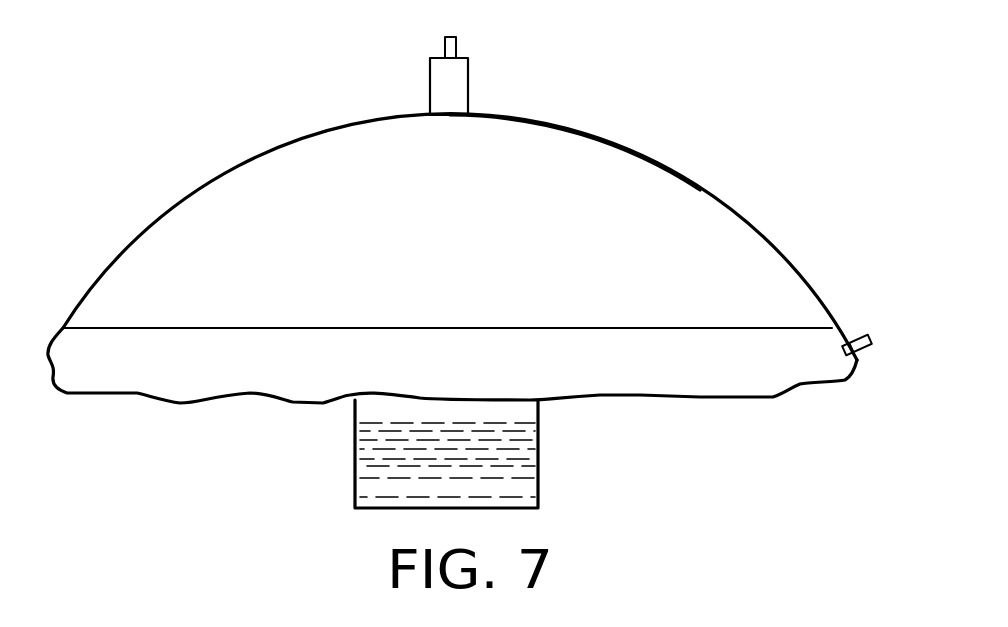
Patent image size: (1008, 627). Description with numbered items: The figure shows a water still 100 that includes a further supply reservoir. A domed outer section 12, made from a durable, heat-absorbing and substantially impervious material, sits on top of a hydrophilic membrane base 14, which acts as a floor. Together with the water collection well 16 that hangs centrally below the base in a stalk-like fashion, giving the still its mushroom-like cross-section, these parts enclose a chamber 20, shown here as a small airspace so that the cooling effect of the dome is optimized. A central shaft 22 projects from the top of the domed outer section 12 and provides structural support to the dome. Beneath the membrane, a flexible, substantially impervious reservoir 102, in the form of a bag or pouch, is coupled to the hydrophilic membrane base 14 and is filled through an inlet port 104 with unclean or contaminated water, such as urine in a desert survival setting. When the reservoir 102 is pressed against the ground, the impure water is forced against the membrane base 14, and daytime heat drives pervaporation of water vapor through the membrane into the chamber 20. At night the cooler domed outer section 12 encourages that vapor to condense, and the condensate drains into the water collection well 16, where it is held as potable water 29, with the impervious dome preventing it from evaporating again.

The domed outer section 12 is at (650, 160).
The hydrophilic membrane base 14 is at (160, 328).
The water collection well 16 is at (542, 460).
The chamber 20 is at (467, 258).
The central shaft 22 is at (470, 83).
The potable water 29 is at (393, 467).
The water still 100 is at (592, 132).
The impervious reservoir 102 is at (650, 380).
The inlet port 104 is at (855, 337).